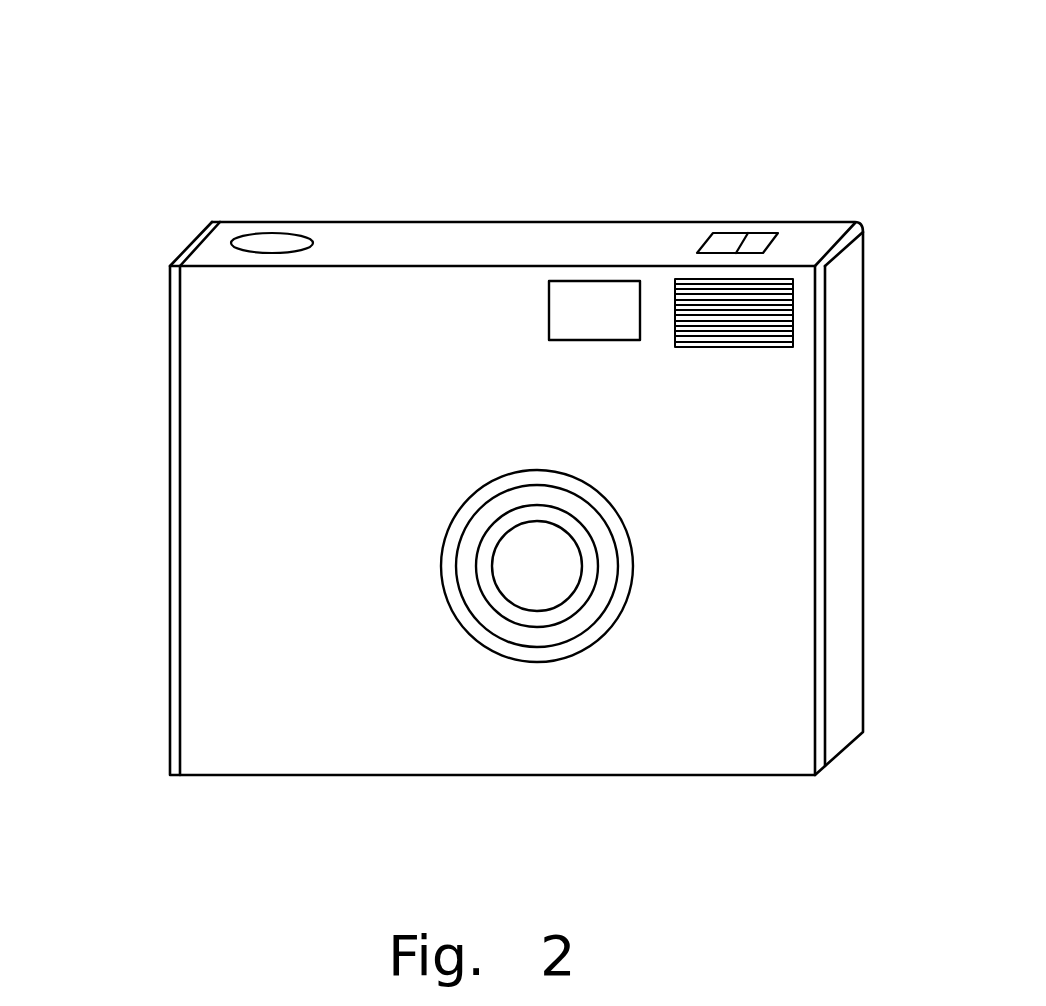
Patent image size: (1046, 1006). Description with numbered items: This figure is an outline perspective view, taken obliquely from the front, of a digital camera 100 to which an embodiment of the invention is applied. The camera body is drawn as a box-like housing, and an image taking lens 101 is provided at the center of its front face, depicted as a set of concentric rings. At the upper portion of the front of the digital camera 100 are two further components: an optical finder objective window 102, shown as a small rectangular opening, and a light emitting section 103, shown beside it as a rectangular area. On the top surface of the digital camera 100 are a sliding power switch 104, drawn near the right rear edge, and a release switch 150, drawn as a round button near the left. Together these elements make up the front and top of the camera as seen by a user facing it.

The digital camera 100 is at (138, 147).
The image taking lens 101 is at (537, 566).
The optical finder objective window 102 is at (585, 303).
The light emitting section 103 is at (698, 298).
The sliding power switch 104 is at (725, 242).
The release switch 150 is at (265, 241).